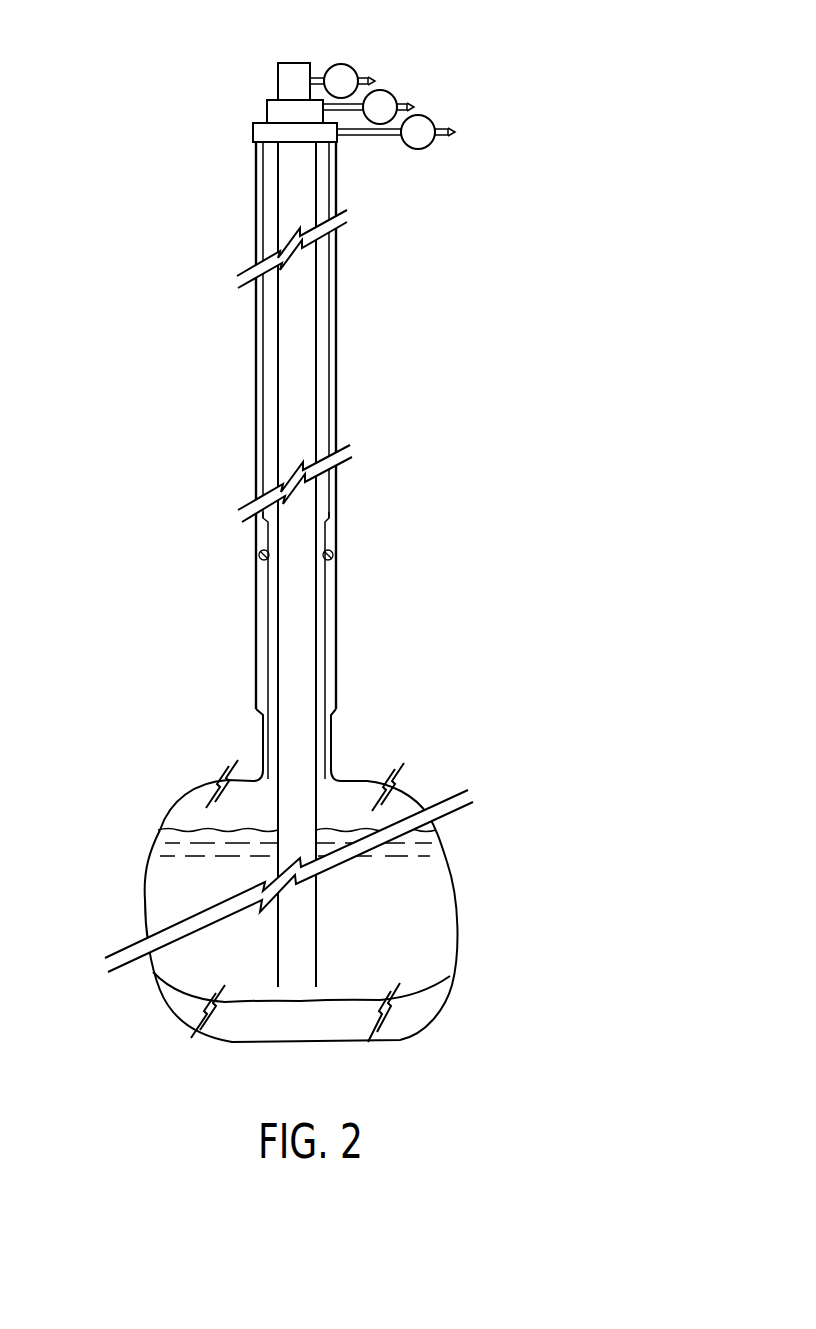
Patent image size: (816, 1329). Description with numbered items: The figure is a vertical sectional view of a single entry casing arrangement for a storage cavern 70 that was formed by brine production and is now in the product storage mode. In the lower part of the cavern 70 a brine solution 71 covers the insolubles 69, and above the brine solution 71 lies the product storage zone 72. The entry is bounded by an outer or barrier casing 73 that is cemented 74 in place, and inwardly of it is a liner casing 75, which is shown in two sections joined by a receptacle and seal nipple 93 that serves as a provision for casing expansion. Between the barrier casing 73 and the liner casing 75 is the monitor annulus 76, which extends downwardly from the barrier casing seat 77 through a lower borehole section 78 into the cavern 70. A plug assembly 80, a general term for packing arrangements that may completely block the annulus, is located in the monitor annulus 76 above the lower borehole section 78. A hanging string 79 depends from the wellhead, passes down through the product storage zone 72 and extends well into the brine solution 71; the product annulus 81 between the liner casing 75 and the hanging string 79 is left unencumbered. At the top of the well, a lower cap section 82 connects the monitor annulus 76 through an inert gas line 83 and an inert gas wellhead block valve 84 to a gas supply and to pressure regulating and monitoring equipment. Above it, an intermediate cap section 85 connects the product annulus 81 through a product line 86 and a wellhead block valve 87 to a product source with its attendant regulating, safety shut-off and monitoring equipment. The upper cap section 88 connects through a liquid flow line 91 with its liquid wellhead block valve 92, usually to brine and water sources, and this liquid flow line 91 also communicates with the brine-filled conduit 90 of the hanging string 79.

The insolubles 69 is at (435, 1007).
The storage cavern 70 is at (147, 873).
The brine solution 71 is at (435, 882).
The product storage zone 72 is at (410, 798).
The outer or barrier casing 73 is at (255, 383).
The cement 74 is at (257, 622).
The liner casing 75 is at (327, 585).
The monitor annulus 76 is at (328, 628).
The barrier casing seat 77 is at (260, 710).
The lower borehole section 78 is at (332, 730).
The hanging string 79 is at (317, 399).
The plug assembly 80 is at (259, 553).
The product annulus 81 is at (318, 322).
The lower cap section 82 is at (275, 133).
The inert gas line 83 is at (347, 133).
The inert gas wellhead block valve 84 is at (428, 122).
The intermediate cap section 85 is at (283, 113).
The product line 86 is at (357, 107).
The wellhead block valve 87 is at (383, 90).
The upper cap section 88 is at (293, 78).
The brine-filled conduit 90 is at (295, 292).
The liquid flow line 91 is at (317, 80).
The liquid wellhead block valve 92 is at (345, 65).
The receptacle and seal nipple 93 is at (266, 535).